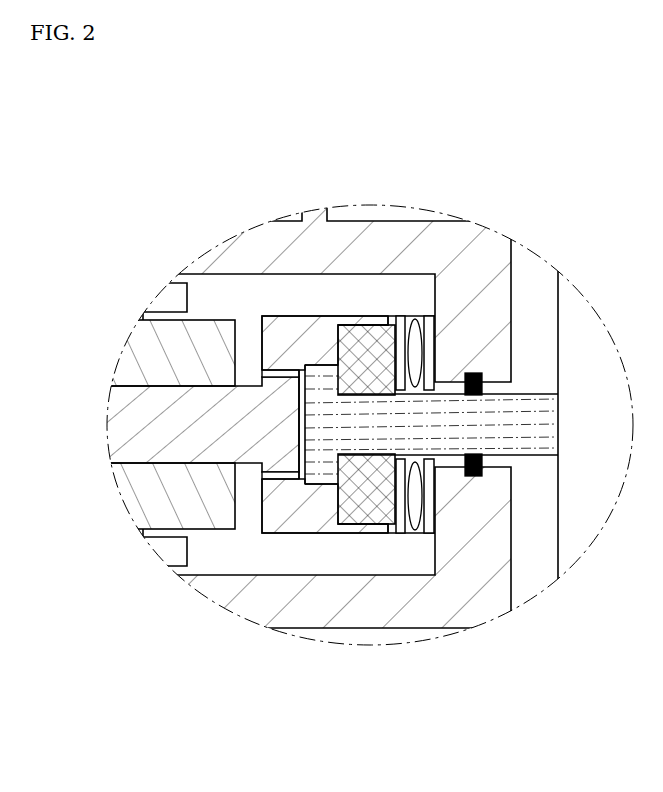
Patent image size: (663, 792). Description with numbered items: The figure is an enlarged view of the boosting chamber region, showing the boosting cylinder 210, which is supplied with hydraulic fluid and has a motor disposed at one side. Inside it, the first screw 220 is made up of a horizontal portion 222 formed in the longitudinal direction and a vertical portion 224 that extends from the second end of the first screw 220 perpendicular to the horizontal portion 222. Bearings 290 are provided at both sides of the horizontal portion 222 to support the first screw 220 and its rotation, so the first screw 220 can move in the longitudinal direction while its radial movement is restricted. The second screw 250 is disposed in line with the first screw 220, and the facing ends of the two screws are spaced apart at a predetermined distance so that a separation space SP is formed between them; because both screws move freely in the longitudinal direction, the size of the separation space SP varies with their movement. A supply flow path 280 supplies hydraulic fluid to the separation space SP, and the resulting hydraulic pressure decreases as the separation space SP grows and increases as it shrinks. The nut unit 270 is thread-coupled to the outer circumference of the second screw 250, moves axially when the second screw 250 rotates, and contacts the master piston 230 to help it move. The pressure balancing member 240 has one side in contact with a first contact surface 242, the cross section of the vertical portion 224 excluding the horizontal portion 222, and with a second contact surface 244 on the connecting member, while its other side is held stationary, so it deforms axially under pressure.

The boosting cylinder 210 is at (255, 597).
The first screw 220 is at (304, 464).
The horizontal portion 222 is at (383, 420).
The vertical portion 224 is at (318, 480).
The master piston 230 is at (165, 297).
The pressure balancing member 240 is at (372, 343).
The first contact surface 242 is at (337, 382).
The second contact surface 244 is at (338, 342).
The second screw 250 is at (123, 420).
The nut unit 270 is at (142, 497).
The supply flow path 280 is at (268, 373).
The bearings 290 is at (417, 513).
The separation space SP is at (300, 422).